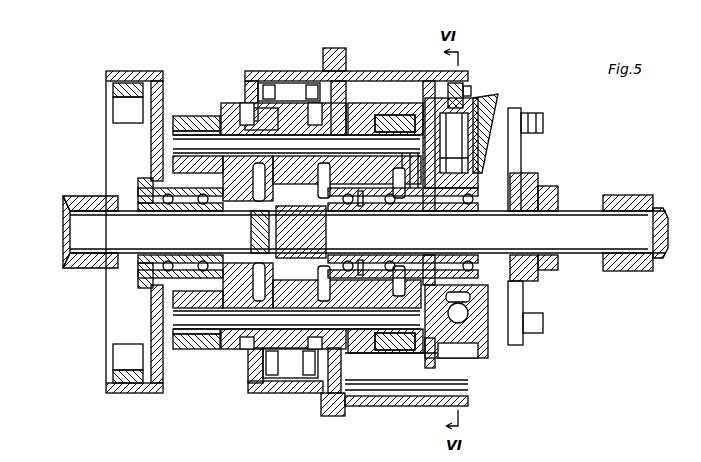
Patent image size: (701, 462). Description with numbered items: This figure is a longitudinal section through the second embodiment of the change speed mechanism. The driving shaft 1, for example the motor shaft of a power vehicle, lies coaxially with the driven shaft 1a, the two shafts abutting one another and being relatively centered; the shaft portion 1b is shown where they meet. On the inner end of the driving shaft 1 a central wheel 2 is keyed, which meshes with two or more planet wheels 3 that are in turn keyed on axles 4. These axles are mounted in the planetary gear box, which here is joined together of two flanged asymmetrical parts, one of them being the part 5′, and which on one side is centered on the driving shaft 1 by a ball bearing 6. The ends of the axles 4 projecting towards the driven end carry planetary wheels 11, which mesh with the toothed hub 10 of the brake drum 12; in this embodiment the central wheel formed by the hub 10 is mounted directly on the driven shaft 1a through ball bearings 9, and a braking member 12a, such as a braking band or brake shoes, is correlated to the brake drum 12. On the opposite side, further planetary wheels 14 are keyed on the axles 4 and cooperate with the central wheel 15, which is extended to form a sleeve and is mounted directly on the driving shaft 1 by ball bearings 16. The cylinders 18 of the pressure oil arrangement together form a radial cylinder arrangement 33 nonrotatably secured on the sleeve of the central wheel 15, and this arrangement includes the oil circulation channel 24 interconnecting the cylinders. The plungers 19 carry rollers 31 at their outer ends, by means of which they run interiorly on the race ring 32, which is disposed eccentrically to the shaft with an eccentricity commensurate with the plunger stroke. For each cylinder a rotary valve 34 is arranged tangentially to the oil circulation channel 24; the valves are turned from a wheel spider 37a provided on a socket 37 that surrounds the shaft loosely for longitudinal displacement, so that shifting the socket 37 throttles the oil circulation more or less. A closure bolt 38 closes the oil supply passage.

The driving shaft 1 is at (580, 215).
The driven shaft 1a is at (70, 218).
The shaft portion 1b is at (243, 224).
The central wheel 2 is at (312, 203).
The planet wheels 3 is at (280, 88).
The axles 4 is at (222, 138).
The flanged asymmetrical part 5′ is at (285, 72).
The ball bearing 6 is at (357, 262).
The ball bearings 9 is at (135, 268).
The hub 10 is at (140, 172).
The planetary wheels 11 is at (187, 110).
The brake drum 12 is at (115, 63).
The braking member 12a is at (110, 88).
The planetary wheels 14 is at (372, 106).
The central wheel 15 is at (386, 172).
The ball bearings 16 is at (455, 258).
The cylinders 18 is at (422, 75).
The plungers 19 is at (478, 95).
The oil circulation channel 24 is at (462, 293).
The rollers 31 is at (462, 86).
The race ring 32 is at (458, 78).
The radial cylinder arrangement 33 is at (473, 167).
The rotary valve 34 is at (470, 328).
The socket 37 is at (550, 262).
The wheel spider 37a is at (505, 142).
The closure bolt 38 is at (502, 102).